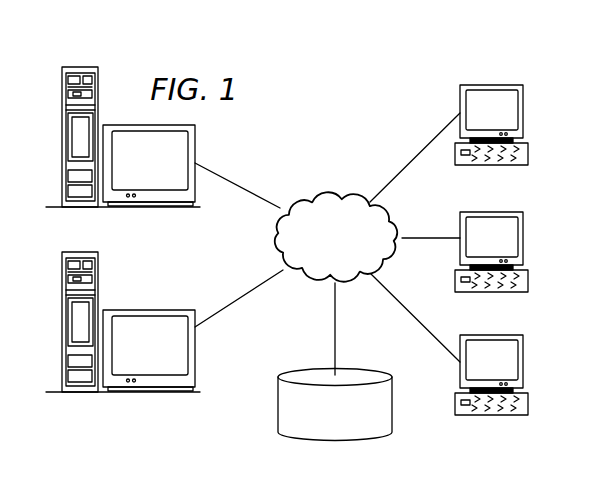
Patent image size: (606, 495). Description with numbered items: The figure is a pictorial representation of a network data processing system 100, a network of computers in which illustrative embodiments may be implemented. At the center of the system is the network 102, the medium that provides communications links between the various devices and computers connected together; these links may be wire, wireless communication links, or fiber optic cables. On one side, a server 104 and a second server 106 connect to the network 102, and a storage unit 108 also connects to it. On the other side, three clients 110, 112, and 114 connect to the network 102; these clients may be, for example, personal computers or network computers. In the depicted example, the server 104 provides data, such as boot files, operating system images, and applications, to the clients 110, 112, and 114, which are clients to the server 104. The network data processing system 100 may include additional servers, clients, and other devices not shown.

The network data processing system 100 is at (380, 88).
The network 102 is at (310, 197).
The server 104 is at (62, 138).
The server 106 is at (62, 323).
The storage unit 108 is at (322, 443).
The client 110 is at (525, 112).
The client 112 is at (525, 240).
The client 114 is at (525, 362).